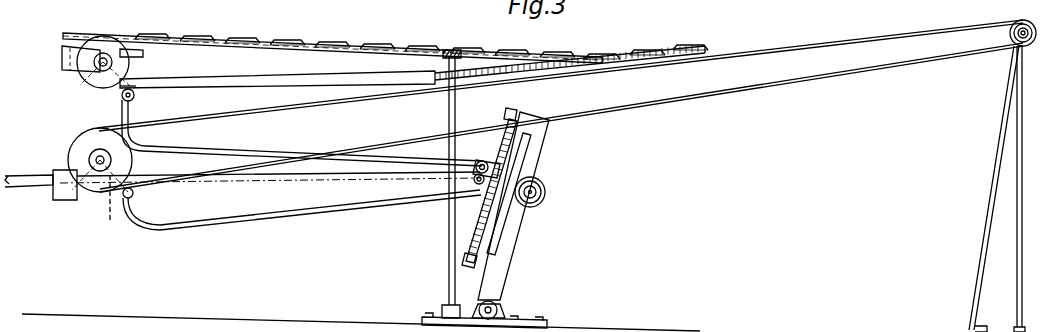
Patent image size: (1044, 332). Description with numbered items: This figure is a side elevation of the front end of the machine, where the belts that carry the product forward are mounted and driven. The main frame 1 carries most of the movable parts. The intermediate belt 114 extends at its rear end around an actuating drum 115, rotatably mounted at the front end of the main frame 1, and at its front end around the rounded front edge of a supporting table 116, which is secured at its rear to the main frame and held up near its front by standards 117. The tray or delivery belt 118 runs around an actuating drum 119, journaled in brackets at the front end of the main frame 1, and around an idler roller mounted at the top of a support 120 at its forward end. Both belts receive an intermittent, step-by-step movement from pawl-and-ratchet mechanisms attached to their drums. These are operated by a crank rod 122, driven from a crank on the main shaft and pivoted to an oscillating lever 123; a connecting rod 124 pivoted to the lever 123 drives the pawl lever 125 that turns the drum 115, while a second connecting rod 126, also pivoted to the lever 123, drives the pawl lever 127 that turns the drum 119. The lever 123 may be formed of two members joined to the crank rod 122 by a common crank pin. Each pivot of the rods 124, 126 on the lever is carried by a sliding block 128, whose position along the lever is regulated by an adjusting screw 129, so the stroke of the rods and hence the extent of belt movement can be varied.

The main frame 1 is at (65, 68).
The intermediate belt 114 is at (276, 79).
The actuating drum 115 is at (92, 80).
The supporting table 116 is at (205, 47).
The standards 117 is at (449, 118).
The delivery belt 118 is at (292, 105).
The actuating drum 119 is at (77, 148).
The support 120 is at (1000, 233).
The crank rod 122 is at (40, 174).
The oscillating lever 123 is at (507, 239).
The connecting rod 124 is at (207, 154).
The pawl lever 125 is at (130, 80).
The second connecting rod 126 is at (243, 208).
The pawl lever 127 is at (116, 206).
The sliding block 128 is at (540, 167).
The adjusting screw 129 is at (468, 232).